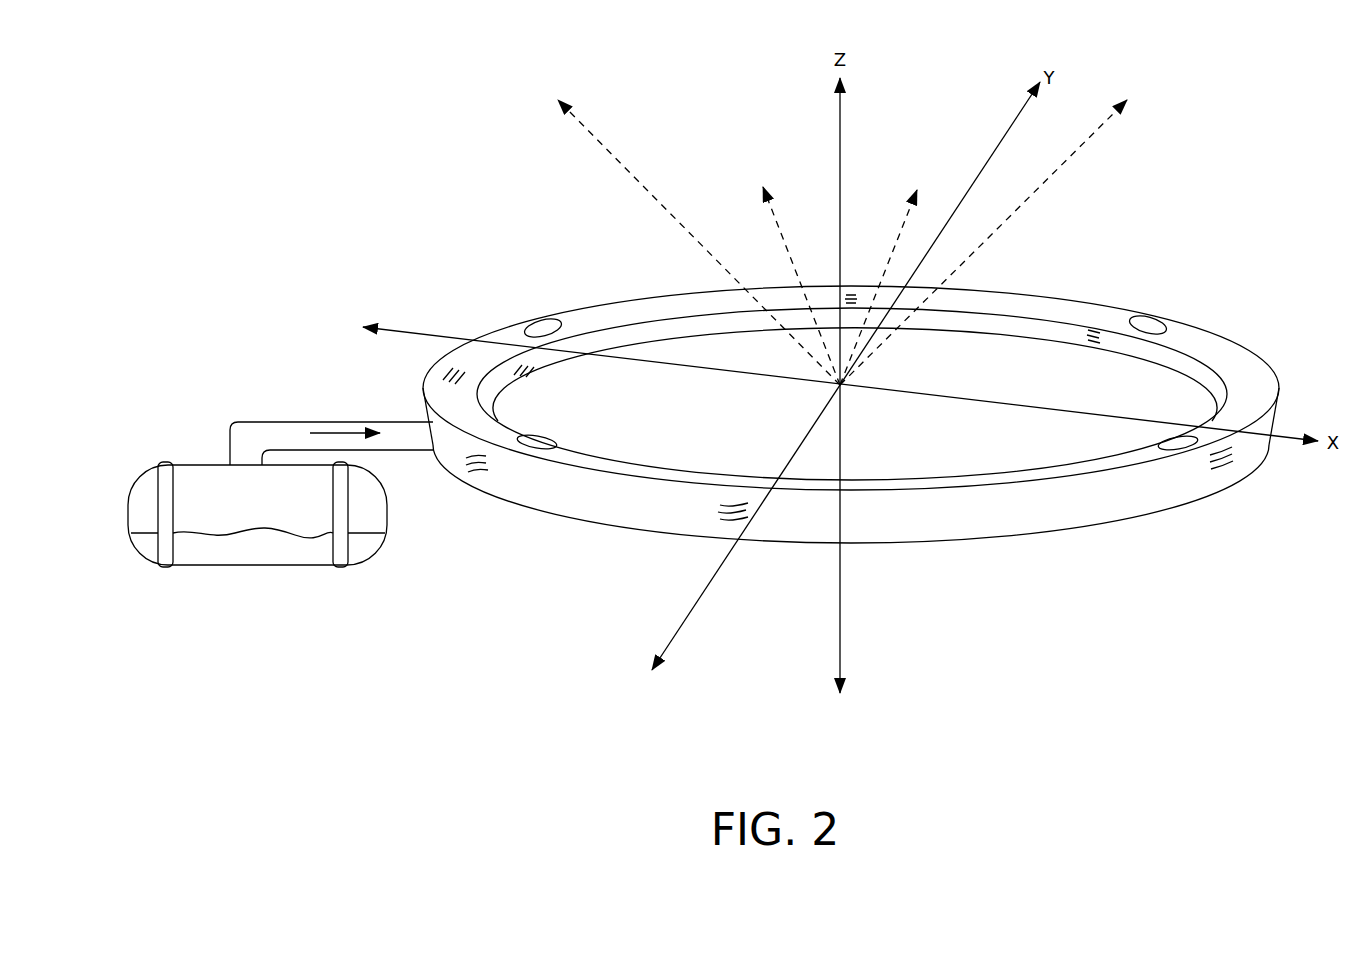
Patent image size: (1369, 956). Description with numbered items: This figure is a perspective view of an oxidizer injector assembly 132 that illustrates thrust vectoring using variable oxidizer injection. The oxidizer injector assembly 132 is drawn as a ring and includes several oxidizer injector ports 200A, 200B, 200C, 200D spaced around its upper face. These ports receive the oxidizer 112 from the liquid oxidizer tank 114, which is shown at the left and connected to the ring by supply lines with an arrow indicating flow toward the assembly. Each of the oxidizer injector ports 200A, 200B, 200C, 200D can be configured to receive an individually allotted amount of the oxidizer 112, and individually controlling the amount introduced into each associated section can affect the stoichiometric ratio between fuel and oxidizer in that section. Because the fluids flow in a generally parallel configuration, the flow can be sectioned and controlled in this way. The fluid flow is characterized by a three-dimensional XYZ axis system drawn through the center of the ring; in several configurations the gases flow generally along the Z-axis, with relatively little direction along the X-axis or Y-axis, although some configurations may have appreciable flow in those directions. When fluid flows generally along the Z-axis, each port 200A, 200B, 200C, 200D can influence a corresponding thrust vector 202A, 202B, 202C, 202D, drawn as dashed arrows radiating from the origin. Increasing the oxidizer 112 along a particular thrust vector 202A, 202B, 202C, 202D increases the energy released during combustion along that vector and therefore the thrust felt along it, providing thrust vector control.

The oxidizer 112 is at (280, 517).
The liquid oxidizer tank 114 is at (258, 523).
The oxidizer injector assembly 132 is at (1198, 222).
The oxidizer injector port 200A is at (544, 324).
The oxidizer injector port 200B is at (541, 438).
The oxidizer injector port 200C is at (1170, 440).
The oxidizer injector port 200D is at (1153, 320).
The thrust vector 202A is at (683, 226).
The thrust vector 202B is at (791, 269).
The thrust vector 202C is at (892, 269).
The thrust vector 202D is at (998, 226).